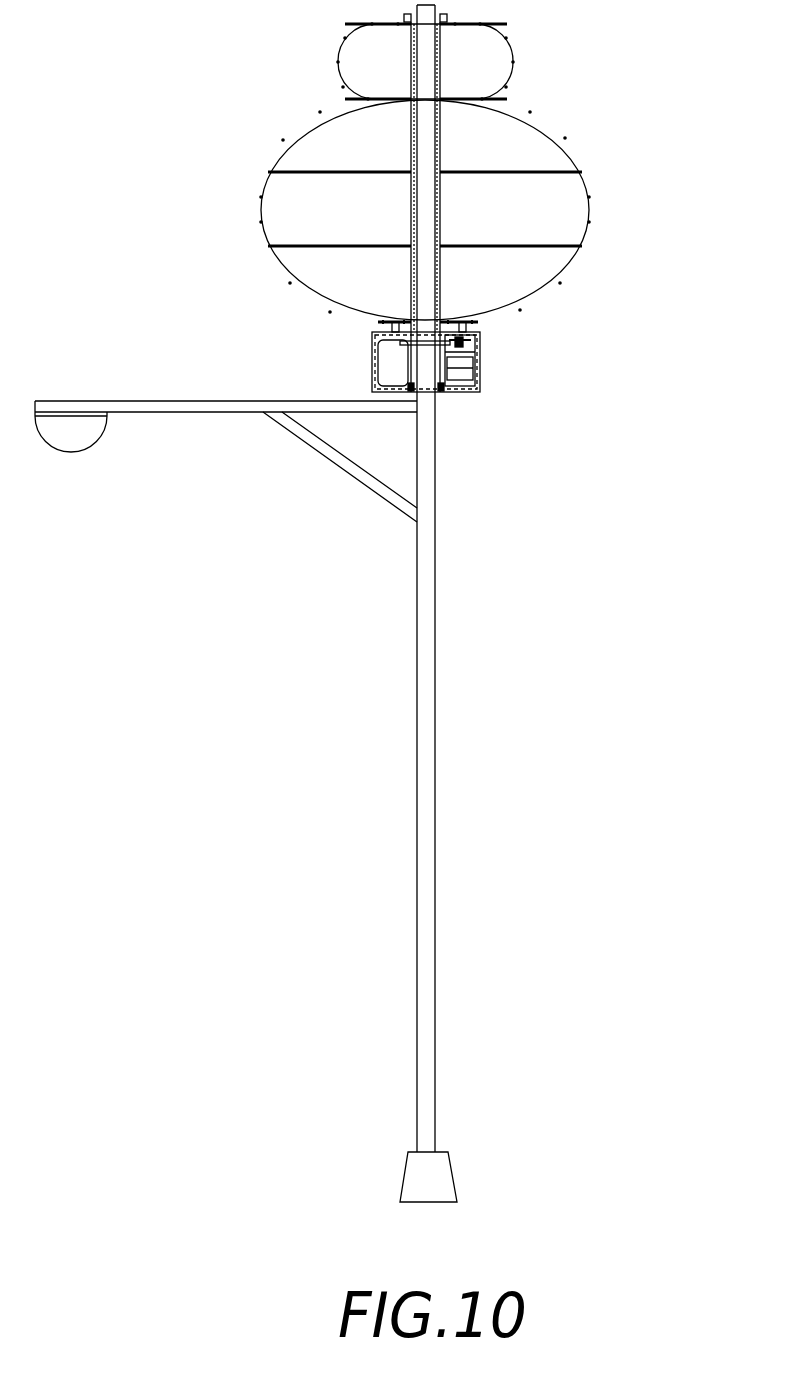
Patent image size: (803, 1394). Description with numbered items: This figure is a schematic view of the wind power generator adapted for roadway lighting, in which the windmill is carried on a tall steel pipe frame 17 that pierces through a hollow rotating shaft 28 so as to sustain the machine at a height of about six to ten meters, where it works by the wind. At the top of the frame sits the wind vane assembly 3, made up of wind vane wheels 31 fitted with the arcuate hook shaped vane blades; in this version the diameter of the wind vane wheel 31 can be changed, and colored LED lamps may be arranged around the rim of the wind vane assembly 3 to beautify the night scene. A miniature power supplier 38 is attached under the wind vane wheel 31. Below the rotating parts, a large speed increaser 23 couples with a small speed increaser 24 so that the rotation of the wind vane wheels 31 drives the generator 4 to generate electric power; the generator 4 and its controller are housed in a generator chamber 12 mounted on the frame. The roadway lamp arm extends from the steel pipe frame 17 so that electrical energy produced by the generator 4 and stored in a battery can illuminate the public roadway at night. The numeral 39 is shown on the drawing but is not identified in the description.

The wind vane assembly 3 is at (495, 80).
The wind vane wheel 31 is at (530, 132).
The balloon seam band 39 is at (267, 247).
The hollow rotating shaft 28 is at (432, 280).
The miniature power supplier 38 is at (383, 327).
The large speed increaser 23 is at (380, 348).
The generator chamber 12 is at (372, 377).
The small speed increaser 24 is at (480, 335).
The generator 4 is at (482, 377).
The steel pipe frame 17 is at (433, 453).